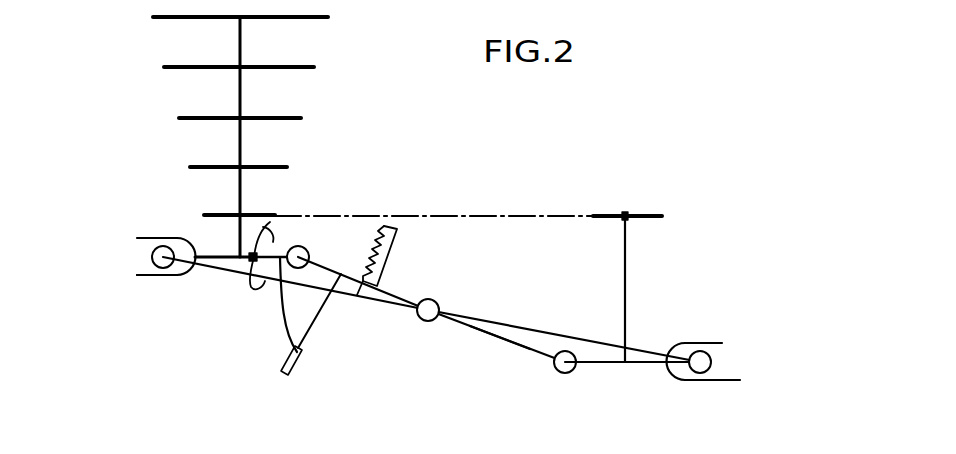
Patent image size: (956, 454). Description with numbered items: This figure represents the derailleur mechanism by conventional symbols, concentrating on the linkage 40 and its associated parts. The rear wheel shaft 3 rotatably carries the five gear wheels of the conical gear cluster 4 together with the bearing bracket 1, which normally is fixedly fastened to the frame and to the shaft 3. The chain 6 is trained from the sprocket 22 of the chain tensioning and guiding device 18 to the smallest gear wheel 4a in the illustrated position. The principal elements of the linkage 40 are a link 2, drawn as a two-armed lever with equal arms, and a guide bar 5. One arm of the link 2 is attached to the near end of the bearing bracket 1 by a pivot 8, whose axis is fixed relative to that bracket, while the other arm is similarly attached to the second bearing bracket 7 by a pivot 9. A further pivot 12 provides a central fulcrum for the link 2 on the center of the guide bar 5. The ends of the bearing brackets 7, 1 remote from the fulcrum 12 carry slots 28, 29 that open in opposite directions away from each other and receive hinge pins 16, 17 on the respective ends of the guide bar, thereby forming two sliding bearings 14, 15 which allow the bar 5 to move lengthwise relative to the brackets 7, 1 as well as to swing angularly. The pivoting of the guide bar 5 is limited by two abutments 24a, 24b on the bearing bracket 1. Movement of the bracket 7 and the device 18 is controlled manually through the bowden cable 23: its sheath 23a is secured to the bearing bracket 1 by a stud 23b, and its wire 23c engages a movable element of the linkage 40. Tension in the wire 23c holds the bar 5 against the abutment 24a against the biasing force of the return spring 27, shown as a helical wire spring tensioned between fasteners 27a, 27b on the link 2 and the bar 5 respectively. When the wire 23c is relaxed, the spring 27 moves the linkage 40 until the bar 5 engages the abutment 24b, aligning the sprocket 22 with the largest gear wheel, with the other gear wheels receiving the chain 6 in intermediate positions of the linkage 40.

The bearing bracket 1 is at (218, 255).
The link 2 is at (463, 325).
The rear wheel shaft 3 is at (240, 148).
The conical gear cluster 4 is at (310, 100).
The smallest gear wheel 4a is at (255, 213).
The guide bar 5 is at (535, 330).
The chain 6 is at (487, 216).
The bearing bracket 7 is at (598, 367).
The pivot 8 is at (303, 250).
The pivot 9 is at (555, 375).
The pivot 12 is at (440, 304).
The sliding bearing 14 is at (720, 371).
The sliding bearing 15 is at (157, 280).
The hinge pin 16 is at (695, 370).
The hinge pin 17 is at (168, 270).
The chain tensioning and guiding device 18 is at (627, 272).
The sprocket 22 is at (642, 216).
The bowden cable 23 is at (286, 337).
The sheath 23a is at (281, 366).
The stud 23b is at (280, 323).
The wire 23c is at (316, 320).
The abutment 24a is at (258, 288).
The abutment 24b is at (270, 222).
The return spring 27 is at (404, 254).
The fastener 27a is at (395, 258).
The fastener 27b is at (358, 296).
The slot 28 is at (712, 345).
The slot 29 is at (145, 238).
The linkage 40 is at (502, 344).